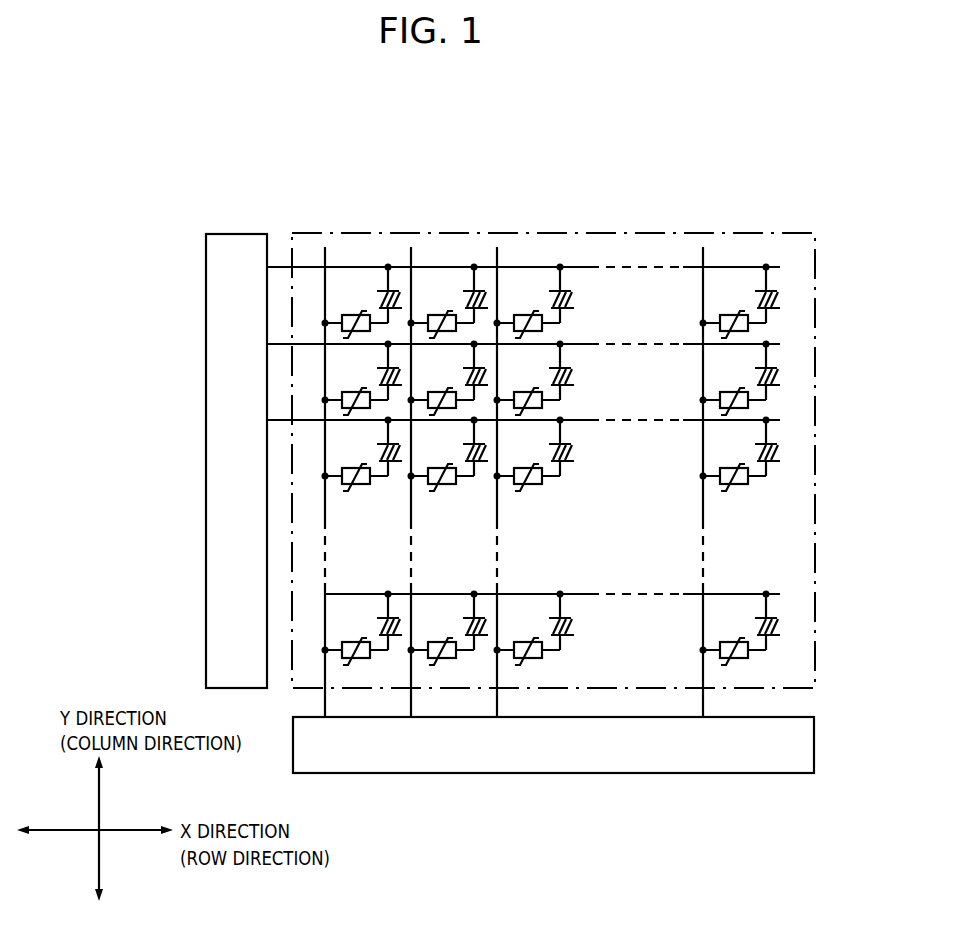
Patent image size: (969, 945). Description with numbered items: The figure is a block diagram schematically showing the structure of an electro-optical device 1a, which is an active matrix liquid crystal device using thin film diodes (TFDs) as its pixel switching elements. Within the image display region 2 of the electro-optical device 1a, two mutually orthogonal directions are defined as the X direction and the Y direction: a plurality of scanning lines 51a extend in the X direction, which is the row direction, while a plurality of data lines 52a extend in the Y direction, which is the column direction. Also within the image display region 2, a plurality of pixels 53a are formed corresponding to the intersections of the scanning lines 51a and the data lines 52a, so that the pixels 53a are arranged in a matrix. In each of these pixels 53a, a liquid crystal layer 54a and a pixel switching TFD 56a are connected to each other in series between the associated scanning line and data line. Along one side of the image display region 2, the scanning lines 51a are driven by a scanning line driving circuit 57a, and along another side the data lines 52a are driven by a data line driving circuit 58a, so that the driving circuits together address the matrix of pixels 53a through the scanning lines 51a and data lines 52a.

The electro-optical device 1a is at (523, 424).
The image display region 2 is at (743, 233).
The scanning line 51a is at (348, 263).
The data line 52a is at (497, 670).
The pixel 53a is at (575, 497).
The liquid crystal layer 54a is at (570, 463).
The pixel switching TFD 56a is at (530, 492).
The scanning line driving circuit 57a is at (206, 310).
The data line driving circuit 58a is at (760, 773).